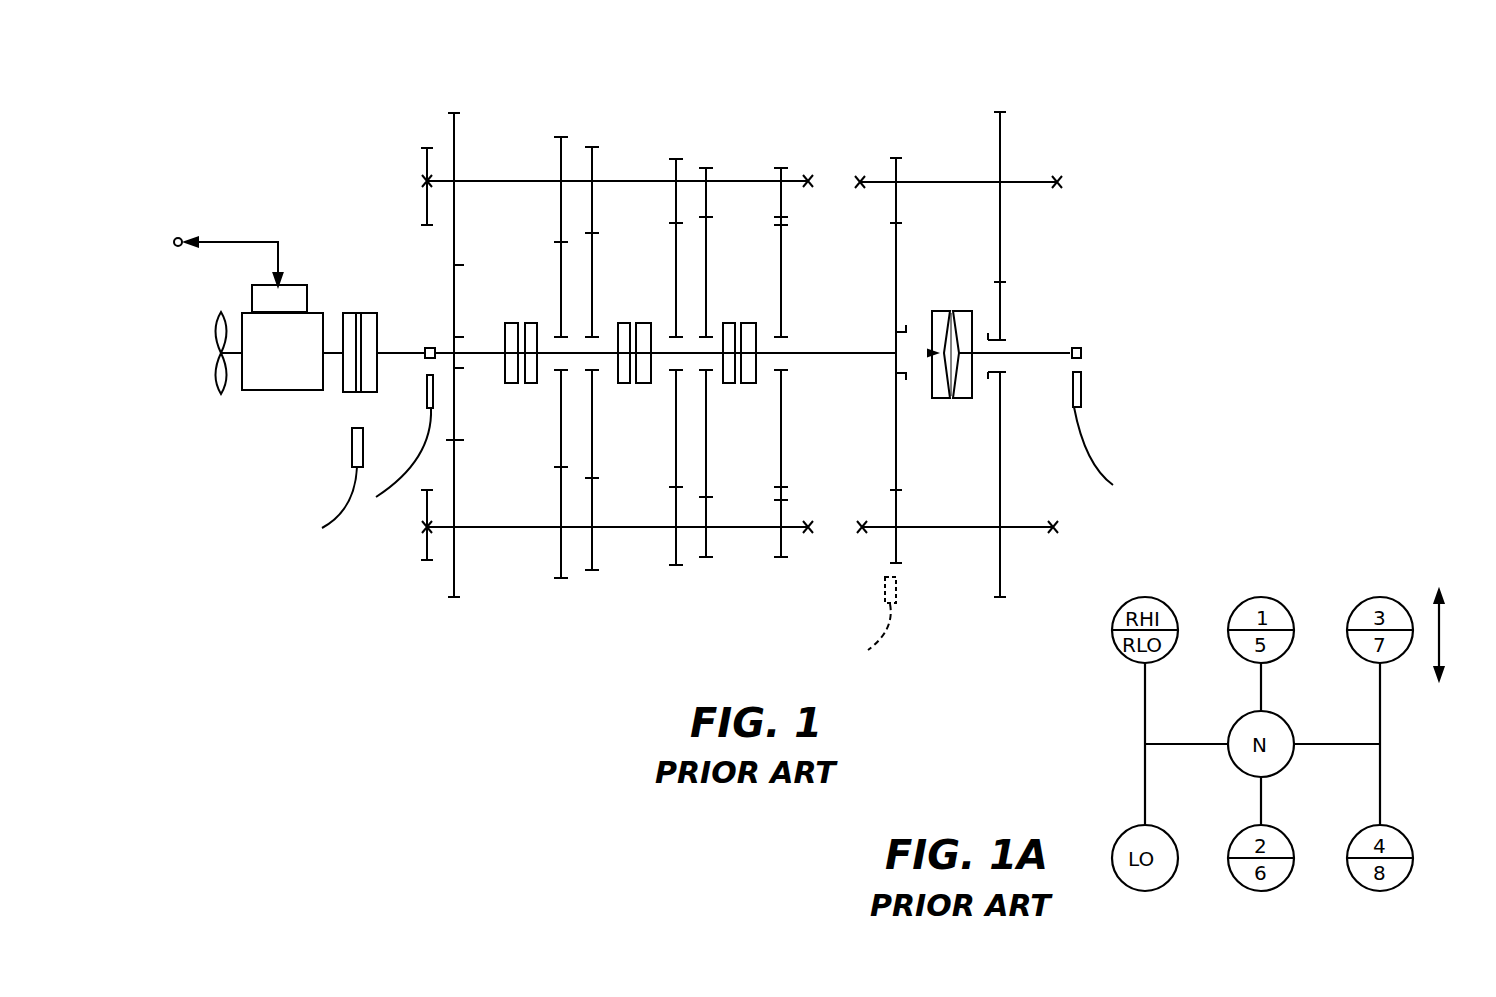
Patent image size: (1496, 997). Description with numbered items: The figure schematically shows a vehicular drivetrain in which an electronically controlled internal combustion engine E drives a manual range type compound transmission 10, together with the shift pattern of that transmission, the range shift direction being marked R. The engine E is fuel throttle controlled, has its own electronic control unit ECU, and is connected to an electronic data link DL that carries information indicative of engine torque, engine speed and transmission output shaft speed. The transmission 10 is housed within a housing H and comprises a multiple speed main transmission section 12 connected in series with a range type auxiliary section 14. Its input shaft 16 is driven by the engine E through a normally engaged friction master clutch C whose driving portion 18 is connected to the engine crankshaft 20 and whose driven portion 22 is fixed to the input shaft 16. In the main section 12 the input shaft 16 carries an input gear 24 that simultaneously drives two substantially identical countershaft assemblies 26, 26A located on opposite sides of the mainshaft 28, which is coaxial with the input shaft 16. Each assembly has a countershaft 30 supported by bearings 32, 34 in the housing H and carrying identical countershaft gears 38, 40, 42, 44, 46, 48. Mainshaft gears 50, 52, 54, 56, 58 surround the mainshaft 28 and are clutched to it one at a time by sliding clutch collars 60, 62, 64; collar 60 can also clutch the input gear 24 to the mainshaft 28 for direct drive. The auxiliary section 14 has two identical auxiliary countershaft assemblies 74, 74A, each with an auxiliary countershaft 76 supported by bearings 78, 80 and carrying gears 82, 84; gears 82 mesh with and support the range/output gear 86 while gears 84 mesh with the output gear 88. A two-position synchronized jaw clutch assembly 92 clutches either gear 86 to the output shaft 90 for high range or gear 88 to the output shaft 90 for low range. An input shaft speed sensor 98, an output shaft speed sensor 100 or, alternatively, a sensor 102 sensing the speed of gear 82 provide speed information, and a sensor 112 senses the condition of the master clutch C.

In FIG. 1, the compound transmission 10 is at (829, 165).
In FIG. 1, the main transmission section 12 is at (626, 169).
In FIG. 1, the auxiliary section 14 is at (926, 150).
In FIG. 1, the input shaft 16 is at (403, 352).
In FIG. 1, the driving portion 18 is at (345, 388).
In FIG. 1, the engine crankshaft 20 is at (333, 331).
In FIG. 1, the driven portion 22 is at (367, 388).
In FIG. 1, the input gear 24 is at (456, 303).
In FIG. 1, the countershaft assembly 26 is at (481, 174).
In FIG. 1, the countershaft assembly 26A is at (521, 535).
In FIG. 1, the mainshaft 28 is at (862, 357).
In FIG. 1, the countershaft 30 is at (522, 190).
In FIG. 1, the bearing 32 is at (422, 525).
In FIG. 1, the bearing 34 is at (810, 530).
In FIG. 1, the countershaft gear 38 is at (456, 587).
In FIG. 1, the countershaft gear 40 is at (556, 570).
In FIG. 1, the countershaft gear 42 is at (597, 555).
In FIG. 1, the countershaft gear 44 is at (670, 545).
In FIG. 1, the countershaft gear 46 is at (712, 545).
In FIG. 1, the countershaft gear 48 is at (778, 545).
In FIG. 1, the mainshaft gear 50 is at (557, 438).
In FIG. 1, the mainshaft gear 52 is at (594, 428).
In FIG. 1, the mainshaft gear 54 is at (675, 468).
In FIG. 1, the mainshaft gear 56 is at (707, 428).
In FIG. 1, the mainshaft gear 58 is at (778, 452).
In FIG. 1, the sliding clutch collar 60 is at (505, 383).
In FIG. 1, the sliding clutch collar 62 is at (651, 324).
In FIG. 1, the sliding clutch collar 64 is at (724, 323).
In FIG. 1, the auxiliary countershaft assembly 74 is at (937, 174).
In FIG. 1, the auxiliary countershaft assembly 74A is at (963, 536).
In FIG. 1, the auxiliary countershaft 76 is at (968, 186).
In FIG. 1, the bearing 78 is at (858, 190).
In FIG. 1, the bearing 80 is at (1063, 185).
In FIG. 1, the auxiliary section countershaft gear 82 is at (900, 170).
In FIG. 1, the auxiliary section countershaft gear 84 is at (1007, 142).
In FIG. 1, the range/output gear 86 is at (893, 279).
In FIG. 1, the output gear 88 is at (998, 292).
In FIG. 1, the output shaft 90 is at (1036, 343).
In FIG. 1, the synchronized jaw clutch assembly 92 is at (946, 410).
In FIG. 1, the input shaft speed sensor 98 is at (423, 387).
In FIG. 1, the output shaft speed sensor 100 is at (1082, 397).
In FIG. 1, the sensor 102 is at (886, 585).
In FIG. 1, the sensor 112 is at (350, 452).
In FIG. 1, the housing H is at (425, 163).
In FIG. 1, the electronic data link DL is at (230, 243).
In FIG. 1, the electronic control unit ECU is at (262, 297).
In FIG. 1, the engine E is at (270, 353).
In FIG. 1, the master clutch C is at (366, 302).
In FIG. 1A, the range shift direction R is at (1442, 635).